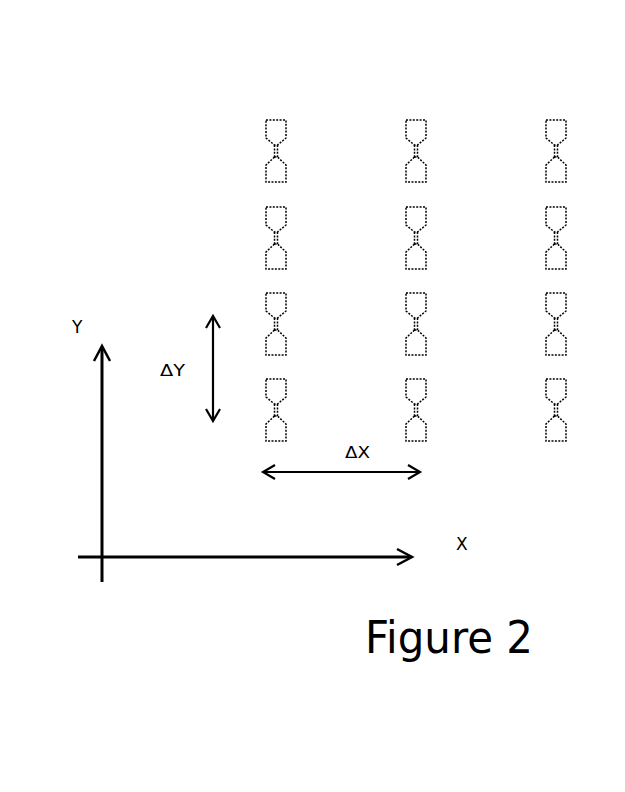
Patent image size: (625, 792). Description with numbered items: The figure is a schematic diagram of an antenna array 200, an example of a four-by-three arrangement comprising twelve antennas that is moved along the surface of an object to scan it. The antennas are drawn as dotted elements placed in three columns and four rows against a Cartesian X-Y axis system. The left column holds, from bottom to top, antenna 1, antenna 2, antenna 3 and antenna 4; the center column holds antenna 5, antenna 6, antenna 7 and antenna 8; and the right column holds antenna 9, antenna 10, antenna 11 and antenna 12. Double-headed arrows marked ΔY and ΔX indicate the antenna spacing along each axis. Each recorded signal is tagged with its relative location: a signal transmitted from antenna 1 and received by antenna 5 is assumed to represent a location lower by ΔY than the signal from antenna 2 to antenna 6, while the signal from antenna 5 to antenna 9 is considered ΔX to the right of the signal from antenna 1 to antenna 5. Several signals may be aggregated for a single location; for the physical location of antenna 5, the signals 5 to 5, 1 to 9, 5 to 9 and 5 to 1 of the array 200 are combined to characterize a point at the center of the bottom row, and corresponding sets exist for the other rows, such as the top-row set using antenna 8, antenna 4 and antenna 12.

The antenna array 200 is at (192, 120).
The antenna 1 is at (269, 409).
The antenna 2 is at (269, 323).
The antenna 3 is at (269, 237).
The antenna 4 is at (269, 150).
The antenna 5 is at (409, 409).
The antenna 6 is at (409, 323).
The antenna 7 is at (409, 237).
The antenna 8 is at (409, 150).
The antenna 9 is at (549, 409).
The antenna 10 is at (544, 323).
The antenna 11 is at (544, 237).
The antenna 12 is at (544, 150).